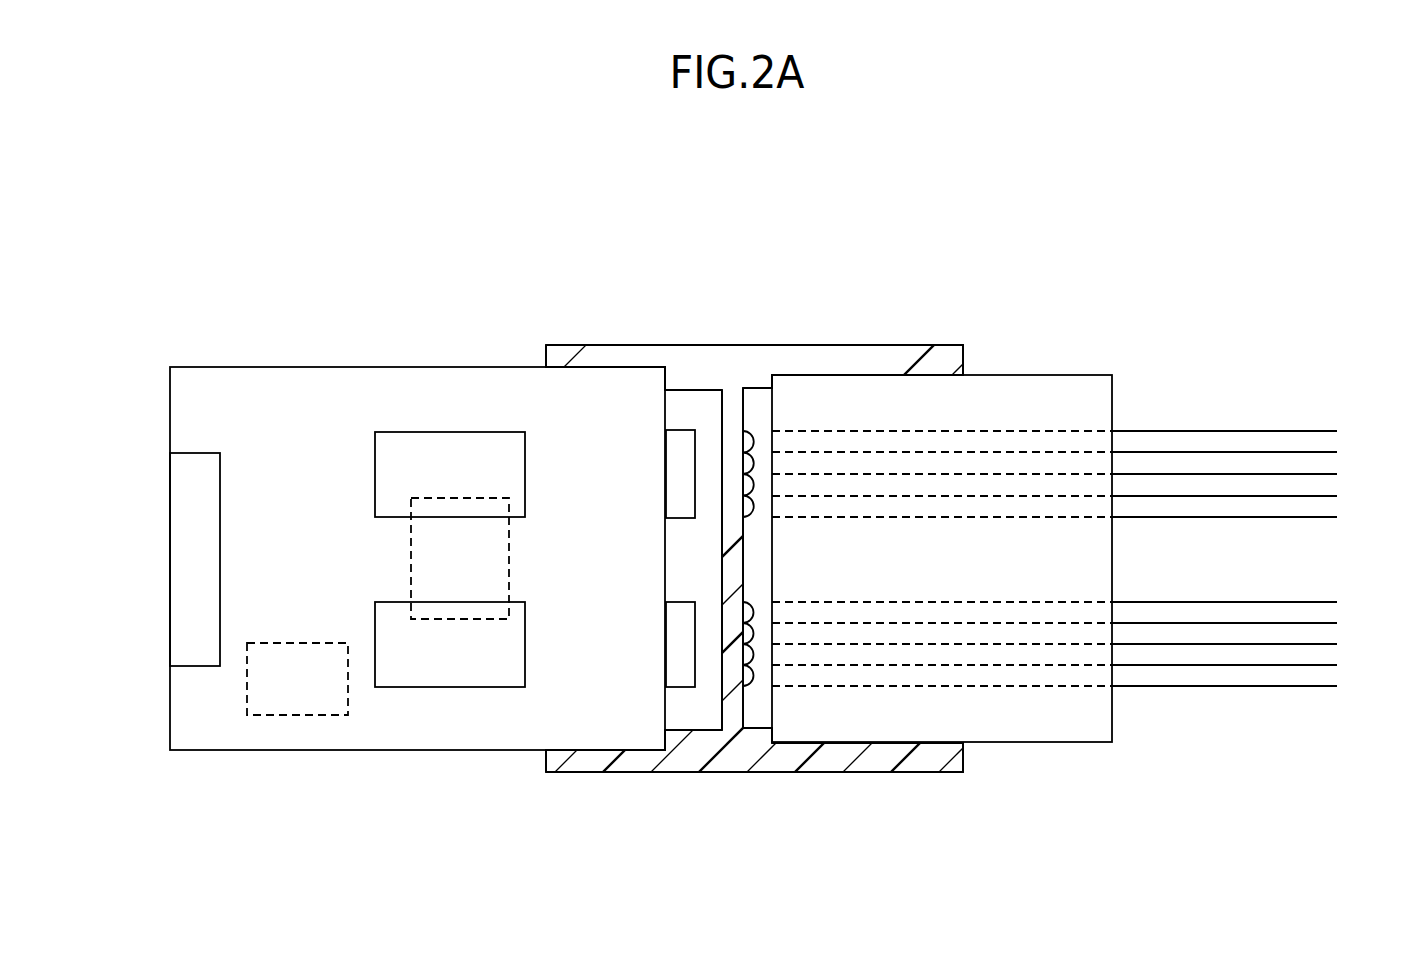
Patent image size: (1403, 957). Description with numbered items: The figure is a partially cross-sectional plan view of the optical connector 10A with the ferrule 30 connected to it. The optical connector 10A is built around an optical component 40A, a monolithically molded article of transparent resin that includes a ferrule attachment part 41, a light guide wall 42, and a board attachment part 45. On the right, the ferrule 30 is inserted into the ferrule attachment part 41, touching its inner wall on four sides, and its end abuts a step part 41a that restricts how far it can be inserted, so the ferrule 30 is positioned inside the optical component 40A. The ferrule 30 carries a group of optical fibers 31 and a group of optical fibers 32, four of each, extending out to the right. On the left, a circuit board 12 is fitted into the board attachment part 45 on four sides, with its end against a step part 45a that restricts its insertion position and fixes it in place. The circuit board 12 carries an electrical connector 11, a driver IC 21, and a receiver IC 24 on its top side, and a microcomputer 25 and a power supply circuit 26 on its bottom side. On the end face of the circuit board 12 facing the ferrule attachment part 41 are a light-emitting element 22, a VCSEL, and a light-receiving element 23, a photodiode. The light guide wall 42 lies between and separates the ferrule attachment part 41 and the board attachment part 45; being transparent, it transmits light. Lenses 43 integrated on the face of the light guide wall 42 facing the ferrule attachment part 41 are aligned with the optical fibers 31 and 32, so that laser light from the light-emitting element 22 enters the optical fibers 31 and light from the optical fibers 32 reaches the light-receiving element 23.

The optical connector 10A is at (1047, 247).
The electrical connector 11 is at (184, 532).
The circuit board 12 is at (328, 752).
The driver IC 21 is at (412, 672).
The light-emitting element 22 is at (675, 672).
The light-receiving element 23 is at (683, 445).
The receiver IC 24 is at (455, 445).
The microcomputer 25 is at (490, 622).
The power supply circuit 26 is at (275, 718).
The ferrule 30 is at (1087, 384).
The optical fibers 31 is at (1350, 602).
The optical fibers 32 is at (1350, 431).
The optical component 40A is at (856, 340).
The ferrule attachment part 41 is at (912, 375).
The step part 41a is at (780, 382).
The light guide wall 42 is at (735, 412).
The lenses 43 is at (750, 507).
The board attachment part 45 is at (587, 367).
The step part 45a is at (664, 386).